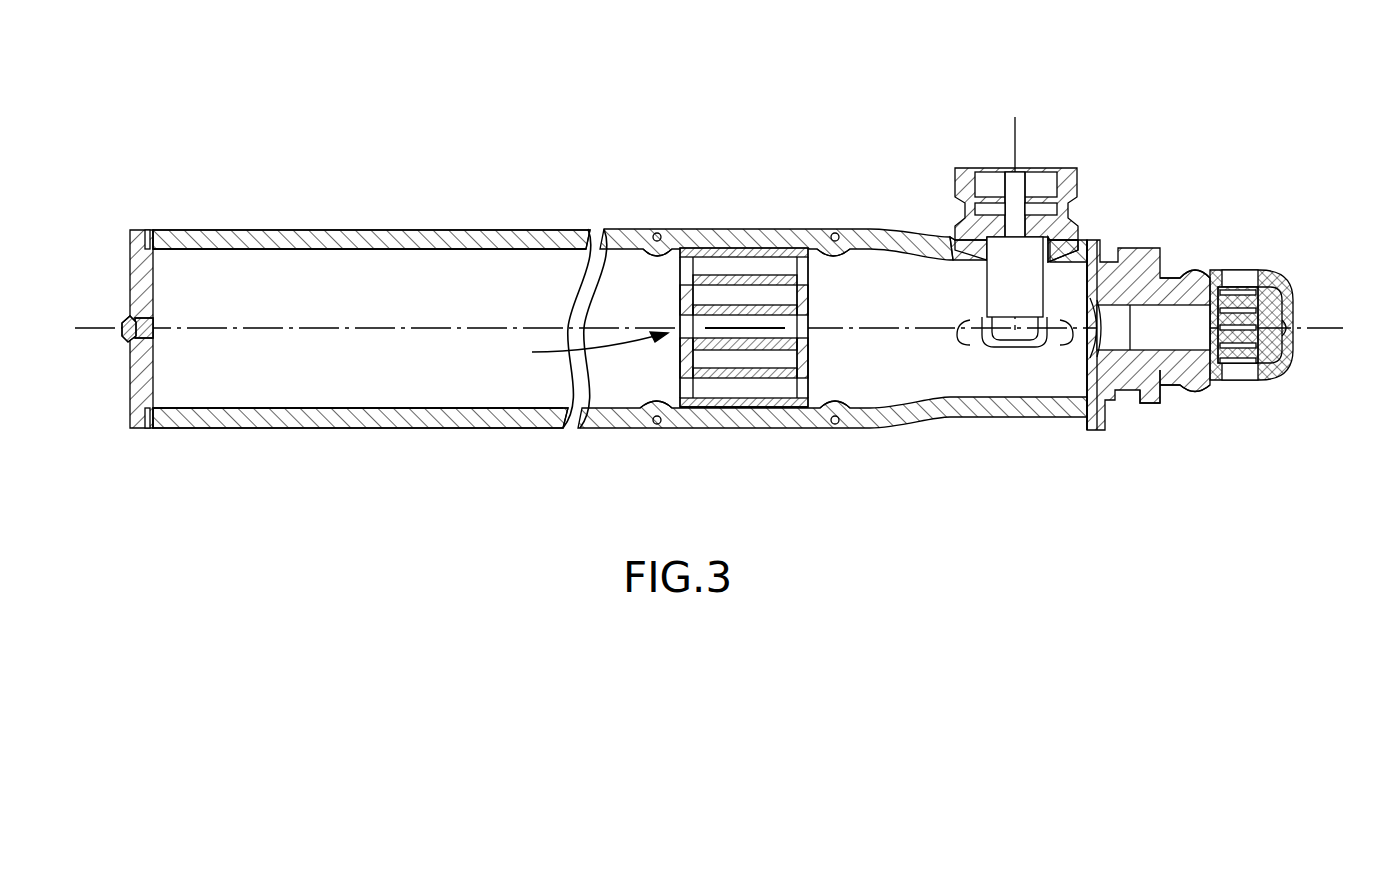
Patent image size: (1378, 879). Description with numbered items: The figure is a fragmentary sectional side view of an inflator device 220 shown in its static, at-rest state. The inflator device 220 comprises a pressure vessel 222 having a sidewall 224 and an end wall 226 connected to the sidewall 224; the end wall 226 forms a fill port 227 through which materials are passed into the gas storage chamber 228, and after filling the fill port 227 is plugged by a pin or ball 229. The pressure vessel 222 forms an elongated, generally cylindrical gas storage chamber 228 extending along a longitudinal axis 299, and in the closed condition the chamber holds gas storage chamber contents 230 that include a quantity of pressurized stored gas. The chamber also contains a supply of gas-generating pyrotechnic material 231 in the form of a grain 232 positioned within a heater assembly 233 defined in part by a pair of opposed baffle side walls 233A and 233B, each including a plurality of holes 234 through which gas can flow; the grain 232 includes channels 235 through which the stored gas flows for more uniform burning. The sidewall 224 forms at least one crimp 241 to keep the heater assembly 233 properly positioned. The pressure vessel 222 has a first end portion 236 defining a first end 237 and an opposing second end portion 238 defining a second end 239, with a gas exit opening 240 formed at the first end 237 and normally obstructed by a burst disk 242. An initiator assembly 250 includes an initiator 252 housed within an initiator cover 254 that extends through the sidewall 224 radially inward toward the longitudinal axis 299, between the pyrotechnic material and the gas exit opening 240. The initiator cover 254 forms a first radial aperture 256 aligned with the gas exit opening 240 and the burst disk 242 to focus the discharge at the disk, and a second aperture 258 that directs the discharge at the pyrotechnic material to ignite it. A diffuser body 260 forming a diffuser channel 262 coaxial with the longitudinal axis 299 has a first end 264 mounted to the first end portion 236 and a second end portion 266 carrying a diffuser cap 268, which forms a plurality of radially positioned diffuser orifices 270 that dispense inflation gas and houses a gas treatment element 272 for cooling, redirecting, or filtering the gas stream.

The inflator device 220 is at (613, 172).
The pressure vessel 222 is at (404, 229).
The sidewall 224 is at (290, 232).
The end wall 226 is at (133, 232).
The fill port 227 is at (152, 321).
The gas storage chamber 228 is at (488, 270).
The pin or ball 229 is at (124, 336).
The gas storage chamber contents 230 is at (390, 377).
The supply of gas-generating pyrotechnic material 231 is at (580, 350).
The grain 232 is at (788, 253).
The heater assembly 233 is at (815, 400).
The baffle side wall 233A is at (688, 363).
The baffle side wall 233B is at (812, 295).
The holes 234 is at (815, 335).
The channels 235 is at (757, 296).
The first end portion 236 is at (1050, 418).
The first end 237 is at (1093, 432).
The second end portion 238 is at (183, 428).
The second end 239 is at (150, 430).
The gas exit opening 240 is at (1122, 262).
The crimp 241 is at (656, 231).
The burst disk 242 is at (1210, 326).
The initiator assembly 250 is at (1040, 148).
The initiator 252 is at (1072, 215).
The initiator cover 254 is at (957, 203).
The first radial aperture 256 is at (1064, 336).
The second aperture 258 is at (966, 336).
The diffuser body 260 is at (1162, 398).
The diffuser channel 262 is at (1182, 303).
The first end 264 is at (1112, 418).
The second end portion 266 is at (1202, 370).
The diffuser cap 268 is at (1280, 376).
The diffuser orifices 270 is at (1242, 275).
The gas treatment element 272 is at (1285, 306).
The longitudinal axis 299 is at (376, 326).